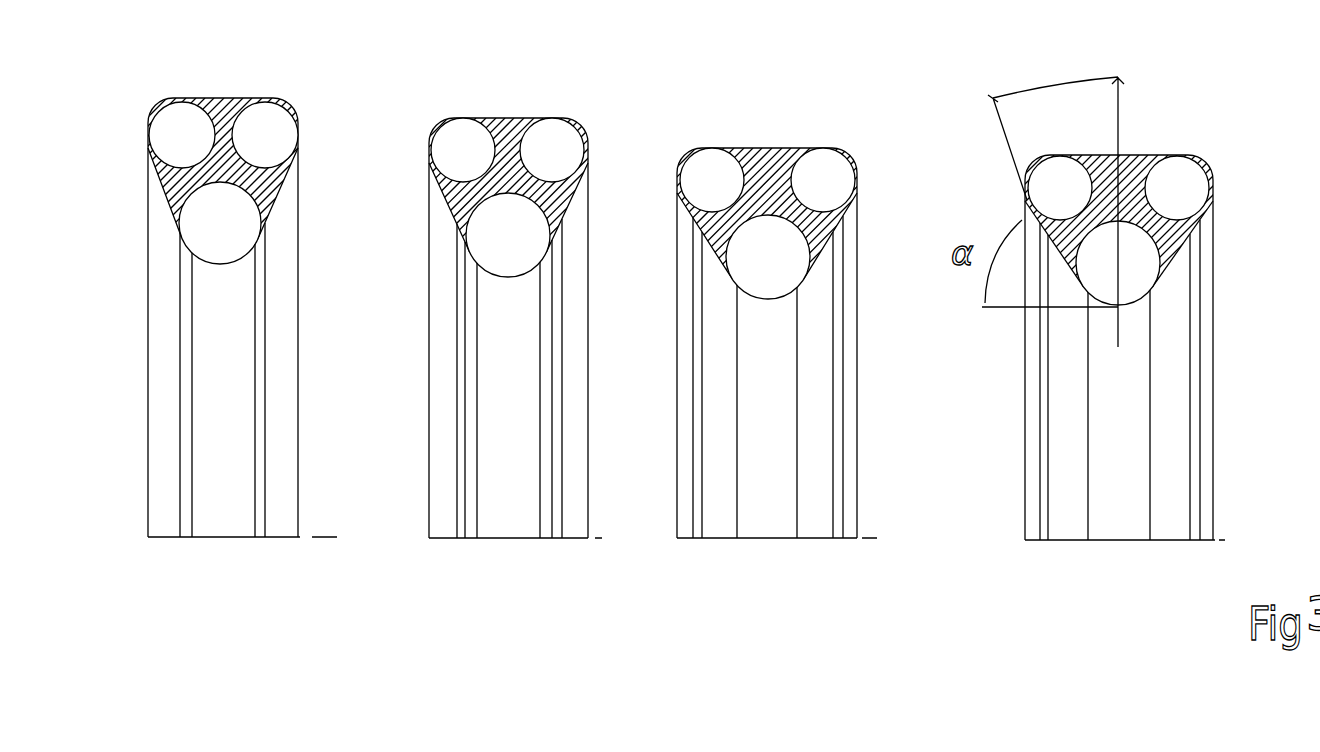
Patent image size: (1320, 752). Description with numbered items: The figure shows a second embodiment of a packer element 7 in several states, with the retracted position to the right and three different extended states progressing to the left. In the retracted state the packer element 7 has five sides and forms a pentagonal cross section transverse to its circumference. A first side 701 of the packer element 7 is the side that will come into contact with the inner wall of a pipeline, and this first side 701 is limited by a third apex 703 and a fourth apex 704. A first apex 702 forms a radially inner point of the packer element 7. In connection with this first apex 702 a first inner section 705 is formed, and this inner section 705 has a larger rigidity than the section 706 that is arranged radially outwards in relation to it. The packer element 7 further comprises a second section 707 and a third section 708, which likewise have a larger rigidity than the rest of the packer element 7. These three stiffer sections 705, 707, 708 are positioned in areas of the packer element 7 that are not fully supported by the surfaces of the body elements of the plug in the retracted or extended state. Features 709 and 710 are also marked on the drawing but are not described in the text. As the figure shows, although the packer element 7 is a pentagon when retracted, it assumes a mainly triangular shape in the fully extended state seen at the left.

The packer element 7 is at (1167, 352).
The first side 701 is at (753, 148).
The first apex 702 is at (770, 297).
The third apex 703 is at (693, 152).
The fourth apex 704 is at (847, 160).
The first inner section 705 is at (497, 235).
The section 706 is at (505, 176).
The second section 707 is at (448, 133).
The third section 708 is at (558, 130).
The left flank of filler 709 is at (1023, 245).
The right flank of filler 710 is at (1197, 243).